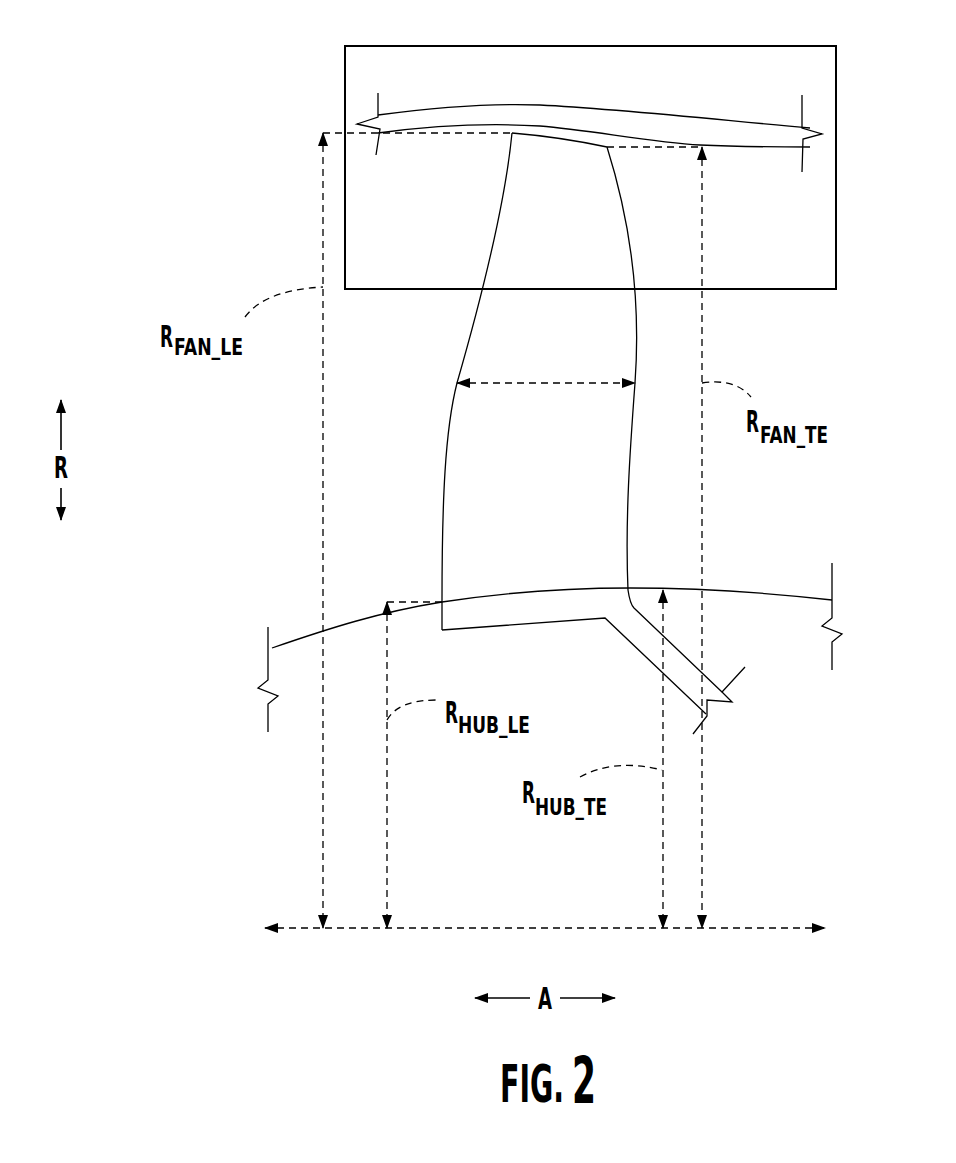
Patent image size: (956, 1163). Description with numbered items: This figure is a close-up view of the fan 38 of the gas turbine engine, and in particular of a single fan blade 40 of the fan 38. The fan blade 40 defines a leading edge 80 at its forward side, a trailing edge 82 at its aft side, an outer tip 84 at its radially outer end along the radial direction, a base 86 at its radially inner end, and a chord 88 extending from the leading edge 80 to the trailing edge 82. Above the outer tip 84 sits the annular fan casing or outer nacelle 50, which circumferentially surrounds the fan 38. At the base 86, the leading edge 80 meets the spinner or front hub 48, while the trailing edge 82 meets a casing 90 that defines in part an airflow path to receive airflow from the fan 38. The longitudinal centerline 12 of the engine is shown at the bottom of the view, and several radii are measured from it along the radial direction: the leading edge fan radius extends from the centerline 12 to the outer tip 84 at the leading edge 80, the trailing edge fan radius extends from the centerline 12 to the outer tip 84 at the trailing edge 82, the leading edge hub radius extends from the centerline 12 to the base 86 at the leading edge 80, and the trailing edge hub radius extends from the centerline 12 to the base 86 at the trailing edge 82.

The longitudinal centerline 12 is at (720, 930).
The fan 38 is at (484, 433).
The fan blade 40 is at (546, 399).
The spinner/front hub 48 is at (298, 646).
The outer nacelle 50 is at (577, 107).
The leading edge 80 is at (440, 455).
The trailing edge 82 is at (642, 345).
The outer tip 84 is at (552, 152).
The base 86 is at (557, 583).
The chord 88 is at (546, 363).
The casing 90 is at (762, 592).